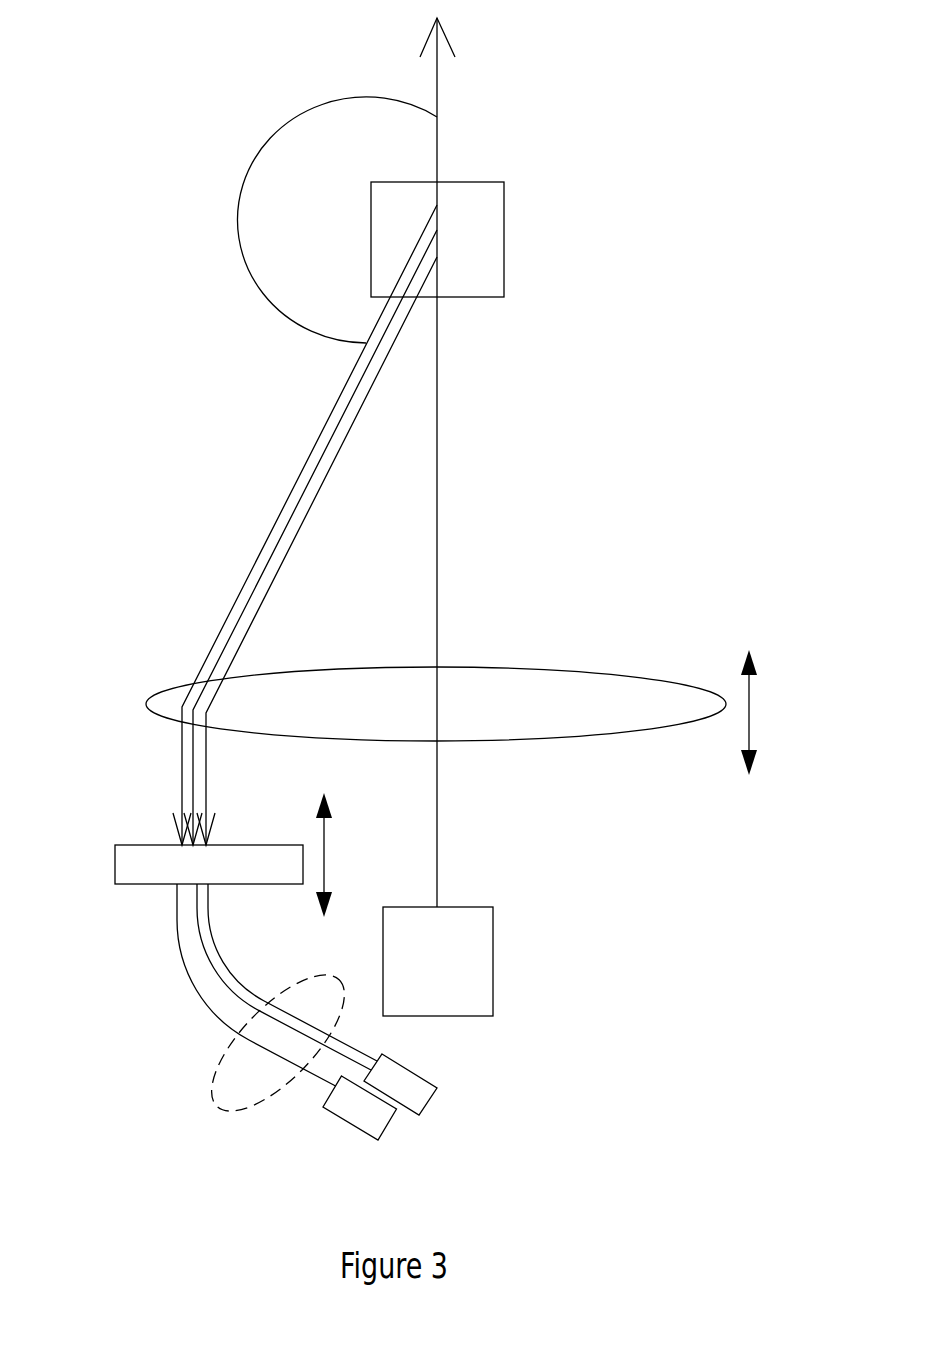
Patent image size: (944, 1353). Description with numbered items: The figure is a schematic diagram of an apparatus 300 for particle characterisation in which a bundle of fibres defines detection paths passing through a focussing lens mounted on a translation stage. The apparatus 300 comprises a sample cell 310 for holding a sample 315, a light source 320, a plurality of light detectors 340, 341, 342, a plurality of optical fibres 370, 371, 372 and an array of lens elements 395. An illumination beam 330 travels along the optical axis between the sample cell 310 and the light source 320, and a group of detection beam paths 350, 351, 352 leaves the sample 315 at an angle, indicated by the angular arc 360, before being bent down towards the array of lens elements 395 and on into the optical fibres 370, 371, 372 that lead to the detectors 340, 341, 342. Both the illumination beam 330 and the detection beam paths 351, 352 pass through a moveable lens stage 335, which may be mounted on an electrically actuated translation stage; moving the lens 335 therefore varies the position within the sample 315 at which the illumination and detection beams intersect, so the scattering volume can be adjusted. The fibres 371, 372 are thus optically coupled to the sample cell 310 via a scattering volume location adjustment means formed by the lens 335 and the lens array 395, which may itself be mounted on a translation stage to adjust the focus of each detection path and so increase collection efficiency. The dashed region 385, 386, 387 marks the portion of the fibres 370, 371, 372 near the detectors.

The apparatus 300 is at (270, 82).
The sample cell 310 is at (504, 250).
The sample 315 is at (493, 235).
The light source 320 is at (493, 958).
The illumination beam 330 is at (437, 455).
The moveable lens stage 335 is at (657, 680).
The light detector 340 is at (421, 1133).
The light detector 341 is at (396, 1116).
The light detector 342 is at (415, 1074).
The light beam 350 is at (270, 536).
The detection beam path 351 is at (247, 596).
The detection beam path 352 is at (320, 488).
The angular range 360 is at (319, 286).
The optical fibre 370 is at (230, 985).
The optical fibre 371 is at (196, 922).
The optical fibre 372 is at (233, 977).
The fiber region 385 is at (246, 1081).
The fiber region 386 is at (246, 1081).
The fiber region 387 is at (217, 1104).
The array of lens elements 395 is at (136, 845).